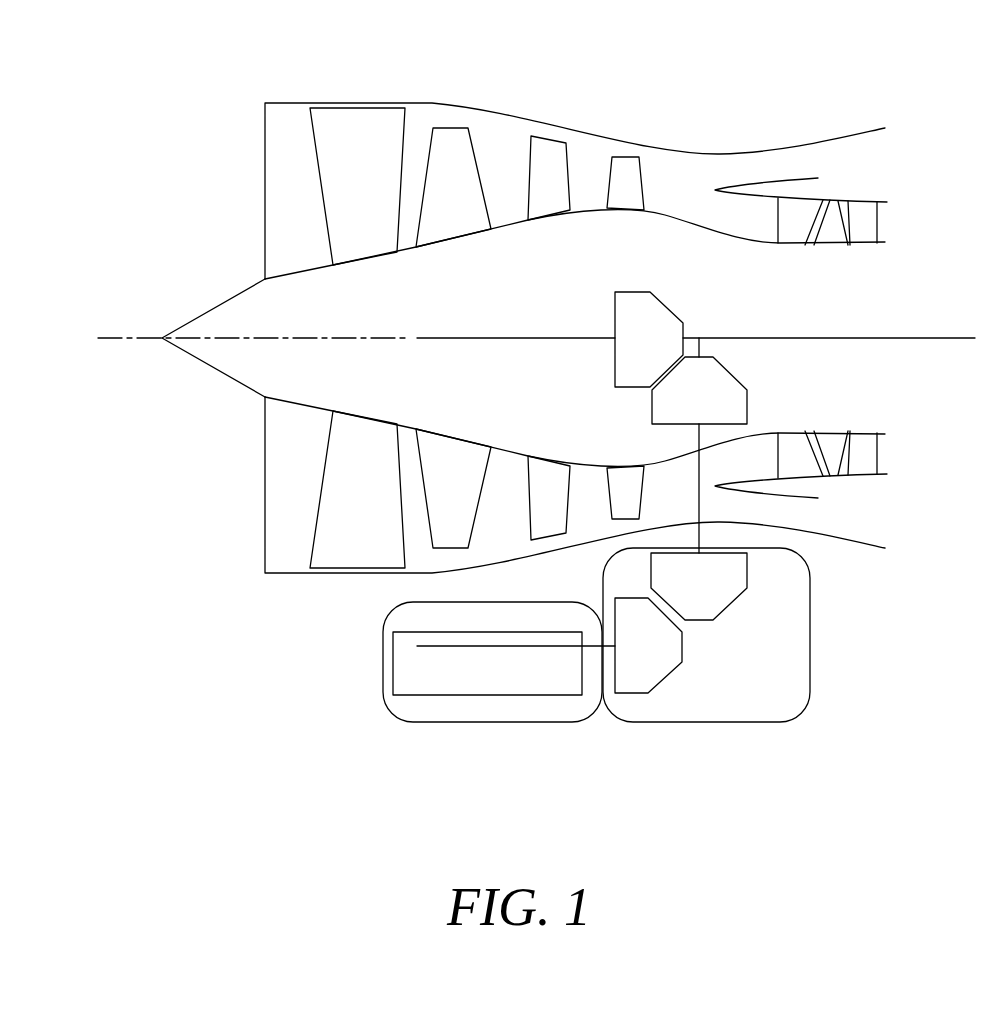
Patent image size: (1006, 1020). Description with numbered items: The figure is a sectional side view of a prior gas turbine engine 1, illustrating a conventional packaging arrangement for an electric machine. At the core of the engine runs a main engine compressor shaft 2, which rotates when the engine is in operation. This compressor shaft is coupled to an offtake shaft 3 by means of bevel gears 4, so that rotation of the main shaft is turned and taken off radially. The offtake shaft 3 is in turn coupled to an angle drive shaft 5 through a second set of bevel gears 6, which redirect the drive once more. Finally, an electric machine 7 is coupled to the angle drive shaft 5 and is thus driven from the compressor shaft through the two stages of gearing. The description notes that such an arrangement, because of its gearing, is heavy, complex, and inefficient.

The gas turbine engine 1 is at (212, 152).
The main engine compressor shaft 2 is at (528, 338).
The offtake shaft 3 is at (700, 470).
The bevel gears 4 is at (652, 395).
The angle drive shaft 5 is at (455, 645).
The second set of bevel gears 6 is at (682, 646).
The electric machine 7 is at (393, 682).